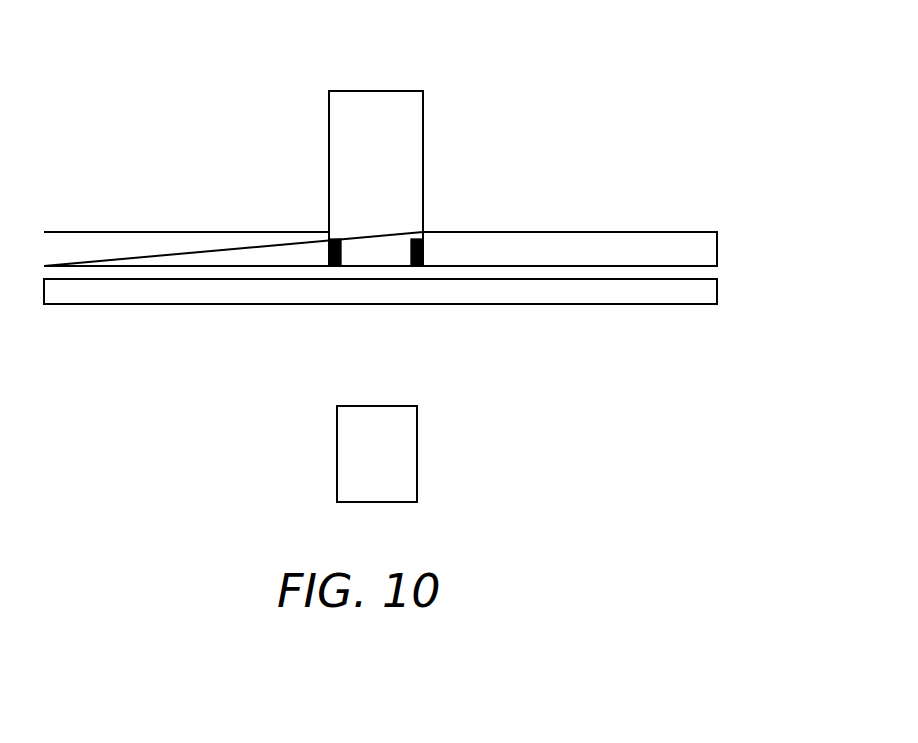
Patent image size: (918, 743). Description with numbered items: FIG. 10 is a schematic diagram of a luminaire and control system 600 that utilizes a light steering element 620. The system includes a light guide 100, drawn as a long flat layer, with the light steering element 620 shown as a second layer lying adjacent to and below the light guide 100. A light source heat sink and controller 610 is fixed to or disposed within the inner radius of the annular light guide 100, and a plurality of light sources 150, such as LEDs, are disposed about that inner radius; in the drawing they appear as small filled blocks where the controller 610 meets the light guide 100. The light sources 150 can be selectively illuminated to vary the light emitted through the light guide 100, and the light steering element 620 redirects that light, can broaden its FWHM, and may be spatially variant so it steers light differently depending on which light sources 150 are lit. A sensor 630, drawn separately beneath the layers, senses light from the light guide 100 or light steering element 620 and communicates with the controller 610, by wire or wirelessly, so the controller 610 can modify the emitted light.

The luminaire and control system 600 is at (584, 101).
The heat sink and controller 610 is at (370, 104).
The light sources 150 is at (343, 247).
The light guide 100 is at (703, 246).
The light steering element 620 is at (703, 290).
The sensor 630 is at (393, 450).